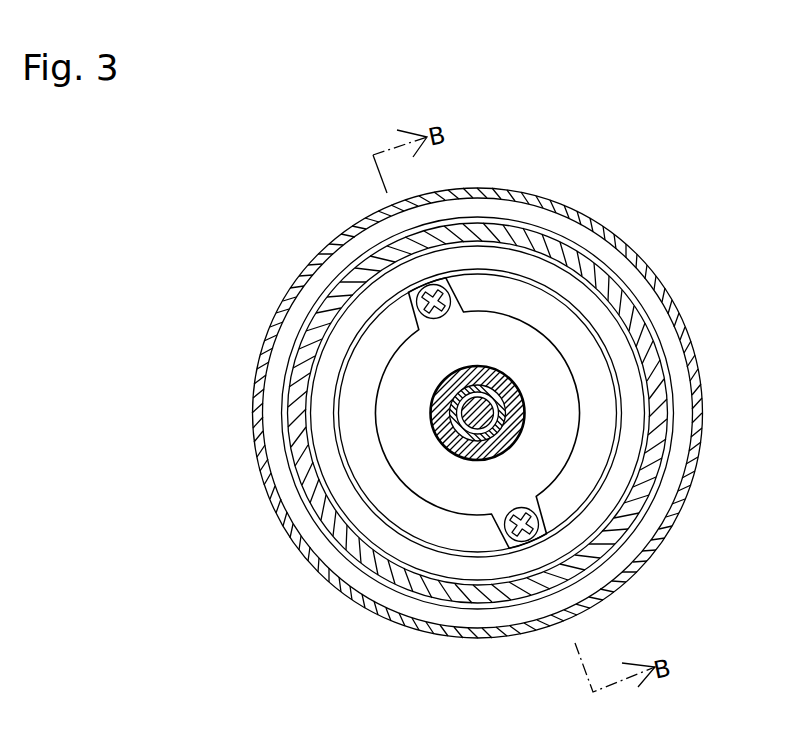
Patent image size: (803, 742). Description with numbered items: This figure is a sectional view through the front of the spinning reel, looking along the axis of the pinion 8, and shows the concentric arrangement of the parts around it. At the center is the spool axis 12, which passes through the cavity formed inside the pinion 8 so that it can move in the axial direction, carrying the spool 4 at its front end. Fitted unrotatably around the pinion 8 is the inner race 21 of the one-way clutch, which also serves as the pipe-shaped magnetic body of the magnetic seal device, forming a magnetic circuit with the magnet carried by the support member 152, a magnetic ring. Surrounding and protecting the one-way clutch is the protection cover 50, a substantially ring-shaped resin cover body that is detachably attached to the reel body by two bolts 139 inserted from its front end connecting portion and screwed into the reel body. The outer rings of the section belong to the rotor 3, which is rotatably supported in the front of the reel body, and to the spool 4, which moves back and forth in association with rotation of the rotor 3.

The rotor 3 is at (606, 293).
The spool 4 is at (596, 227).
The pinion 8 is at (493, 386).
The spool axis 12 is at (512, 413).
The inner race 21 is at (458, 456).
The protection cover 50 is at (588, 352).
The bolt 139 is at (424, 289).
The support member 152 is at (550, 453).